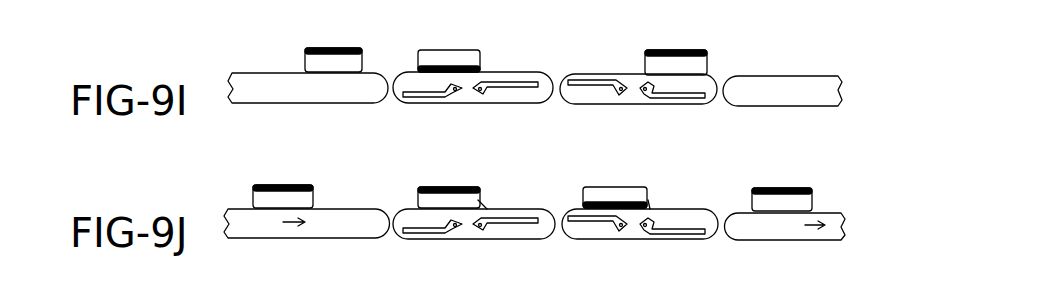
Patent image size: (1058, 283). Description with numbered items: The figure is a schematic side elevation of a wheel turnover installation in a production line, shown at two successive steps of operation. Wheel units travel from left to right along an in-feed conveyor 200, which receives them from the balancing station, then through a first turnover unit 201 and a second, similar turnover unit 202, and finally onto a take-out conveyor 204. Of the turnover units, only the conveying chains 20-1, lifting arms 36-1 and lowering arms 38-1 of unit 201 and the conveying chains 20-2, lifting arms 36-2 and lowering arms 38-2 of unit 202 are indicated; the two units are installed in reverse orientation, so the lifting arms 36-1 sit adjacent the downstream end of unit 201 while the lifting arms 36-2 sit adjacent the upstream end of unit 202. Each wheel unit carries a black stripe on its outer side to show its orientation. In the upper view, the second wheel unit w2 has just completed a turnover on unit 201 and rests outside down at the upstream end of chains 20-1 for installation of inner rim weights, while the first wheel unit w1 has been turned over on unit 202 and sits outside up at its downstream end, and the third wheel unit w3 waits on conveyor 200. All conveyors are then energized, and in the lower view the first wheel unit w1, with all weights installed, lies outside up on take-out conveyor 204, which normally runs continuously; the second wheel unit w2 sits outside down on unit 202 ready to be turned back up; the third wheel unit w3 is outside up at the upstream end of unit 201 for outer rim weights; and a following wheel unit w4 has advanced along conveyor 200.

In FIG. 9I, the in-feed conveyor 200 is at (247, 73).
In FIG. 9J, the in-feed conveyor 200 is at (226, 209).
In FIG. 9I, the first turnover unit 201 is at (491, 72).
In FIG. 9J, the first turnover unit 201 is at (498, 208).
In FIG. 9I, the second turnover unit 202 is at (611, 74).
In FIG. 9J, the second turnover unit 202 is at (673, 208).
In FIG. 9I, the take-out conveyor 204 is at (803, 76).
In FIG. 9J, the take-out conveyor 204 is at (823, 212).
In FIG. 9J, the conveying chains 20-1 is at (487, 209).
In FIG. 9J, the conveying chains 20-2 is at (650, 209).
In FIG. 9I, the lifting arms 36-1 is at (525, 80).
In FIG. 9J, the lifting arms 36-1 is at (514, 214).
In FIG. 9I, the lifting arms 36-2 is at (577, 80).
In FIG. 9J, the lifting arms 36-2 is at (571, 216).
In FIG. 9I, the lowering arms 38-1 is at (407, 92).
In FIG. 9J, the lowering arms 38-1 is at (405, 226).
In FIG. 9I, the lowering arms 38-2 is at (670, 93).
In FIG. 9J, the lowering arms 38-2 is at (697, 230).
In FIG. 9I, the wheel unit w1 is at (648, 50).
In FIG. 9J, the wheel unit w1 is at (758, 186).
In FIG. 9I, the wheel unit w2 is at (433, 50).
In FIG. 9J, the wheel unit w2 is at (602, 187).
In FIG. 9I, the wheel unit w3 is at (306, 49).
In FIG. 9J, the wheel unit w3 is at (425, 187).
In FIG. 9J, the wheel unit w4 is at (274, 185).